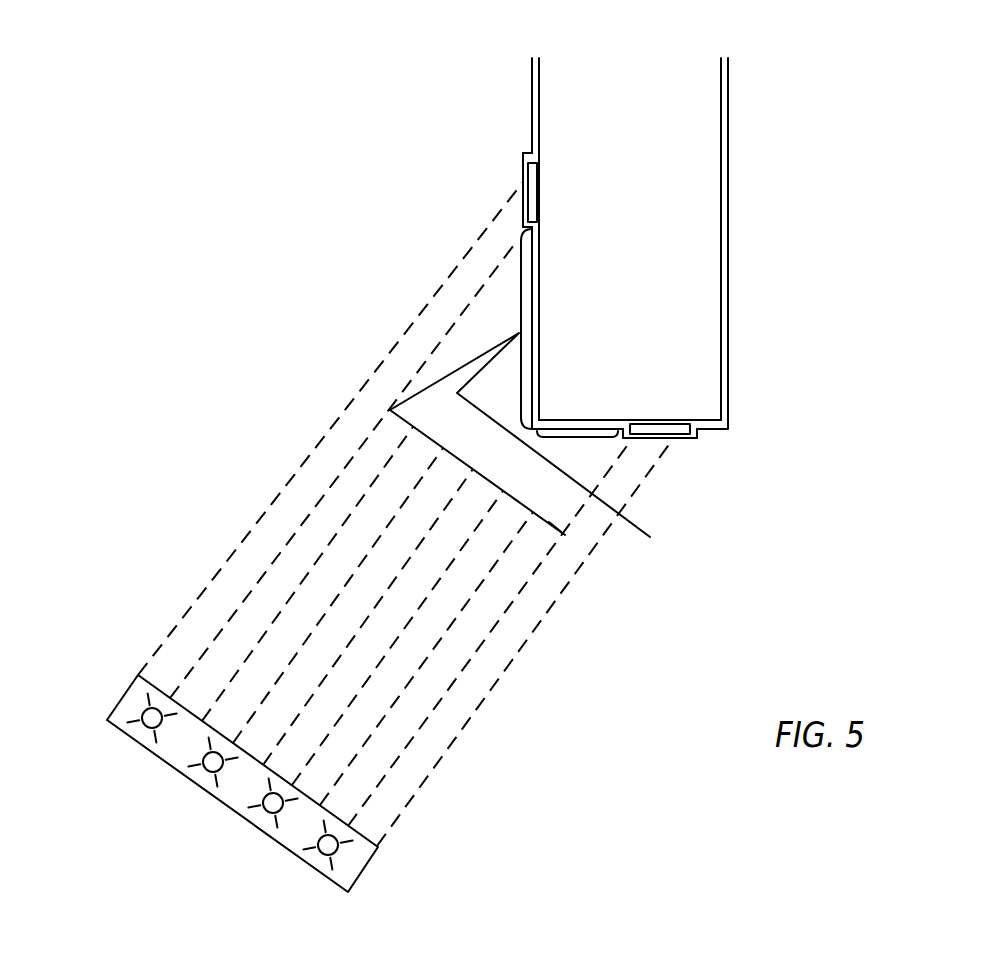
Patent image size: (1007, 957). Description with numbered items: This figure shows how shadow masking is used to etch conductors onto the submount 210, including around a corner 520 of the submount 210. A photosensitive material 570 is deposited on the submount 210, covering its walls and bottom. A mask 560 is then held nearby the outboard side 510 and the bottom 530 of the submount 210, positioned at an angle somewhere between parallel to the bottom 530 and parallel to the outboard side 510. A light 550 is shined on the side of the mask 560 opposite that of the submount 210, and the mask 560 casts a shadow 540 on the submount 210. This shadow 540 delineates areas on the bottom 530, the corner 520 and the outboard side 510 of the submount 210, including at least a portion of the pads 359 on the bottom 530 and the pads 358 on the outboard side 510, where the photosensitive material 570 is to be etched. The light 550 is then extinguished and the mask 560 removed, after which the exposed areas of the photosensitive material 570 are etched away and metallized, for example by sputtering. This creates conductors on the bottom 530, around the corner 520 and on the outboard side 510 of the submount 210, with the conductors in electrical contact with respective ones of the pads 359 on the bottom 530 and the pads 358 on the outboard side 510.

The submount 210 is at (647, 174).
The pads 358 is at (516, 159).
The pads 359 is at (688, 447).
The outboard side 510 is at (539, 258).
The corner 520 is at (540, 419).
The bottom 530 is at (708, 420).
The shadow 540 is at (573, 441).
The light 550 is at (338, 840).
The mask 560 is at (549, 522).
The photosensitive material 570 is at (727, 192).